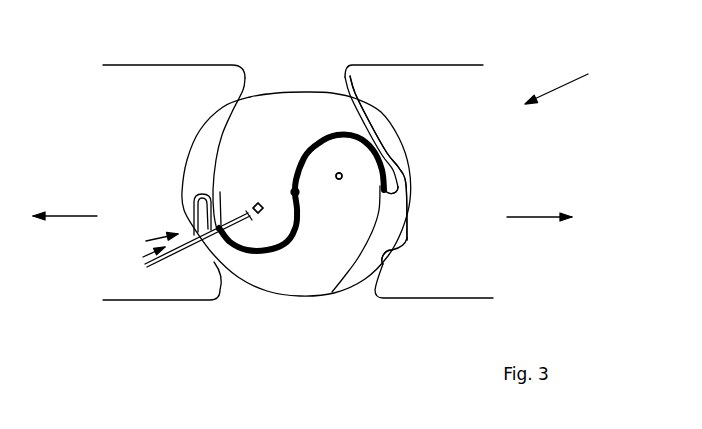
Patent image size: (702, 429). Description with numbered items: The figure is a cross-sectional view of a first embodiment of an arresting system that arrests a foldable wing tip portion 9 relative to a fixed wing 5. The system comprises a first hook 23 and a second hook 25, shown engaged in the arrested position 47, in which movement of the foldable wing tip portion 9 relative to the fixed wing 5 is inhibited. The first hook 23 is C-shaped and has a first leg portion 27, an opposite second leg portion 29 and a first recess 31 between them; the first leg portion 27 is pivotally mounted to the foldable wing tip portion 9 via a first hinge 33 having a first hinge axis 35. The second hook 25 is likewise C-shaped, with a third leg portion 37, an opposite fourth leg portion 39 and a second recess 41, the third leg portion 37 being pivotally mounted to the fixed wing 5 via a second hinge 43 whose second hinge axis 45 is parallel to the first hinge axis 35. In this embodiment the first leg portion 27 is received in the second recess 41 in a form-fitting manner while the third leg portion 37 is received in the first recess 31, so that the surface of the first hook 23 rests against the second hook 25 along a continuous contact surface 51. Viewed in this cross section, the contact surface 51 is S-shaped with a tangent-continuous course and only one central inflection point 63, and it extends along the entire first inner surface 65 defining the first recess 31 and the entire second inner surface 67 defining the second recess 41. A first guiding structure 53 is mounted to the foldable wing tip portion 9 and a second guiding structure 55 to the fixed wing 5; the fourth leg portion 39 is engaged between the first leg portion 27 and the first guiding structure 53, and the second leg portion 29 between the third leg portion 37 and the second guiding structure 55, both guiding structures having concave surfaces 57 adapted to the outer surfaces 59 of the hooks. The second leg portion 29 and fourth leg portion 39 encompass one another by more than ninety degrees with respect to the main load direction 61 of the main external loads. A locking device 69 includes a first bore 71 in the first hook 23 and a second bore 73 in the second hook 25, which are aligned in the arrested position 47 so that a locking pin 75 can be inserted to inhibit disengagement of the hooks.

The fixed wing 5 is at (84, 135).
The foldable wing tip portion 9 is at (504, 150).
The first hook 23 is at (340, 220).
The second hook 25 is at (256, 236).
The first leg portion 27 is at (378, 160).
The second leg portion 29 is at (221, 250).
The first recess 31 is at (265, 255).
The first hinge 33 is at (342, 174).
The first hinge axis 35 is at (342, 174).
The third leg portion 37 is at (253, 130).
The fourth leg portion 39 is at (407, 172).
The second recess 41 is at (317, 137).
The second hinge 43 is at (257, 203).
The second hinge axis 45 is at (257, 203).
The arrested position 47 is at (556, 78).
The contact surface 51 is at (303, 238).
The first guiding structure 53 is at (448, 199).
The second guiding structure 55 is at (125, 221).
The concave surfaces 57 is at (390, 250).
The outer surfaces 59 is at (194, 212).
The main load direction 61 is at (73, 212).
The central inflection point 63 is at (294, 192).
The first inner surface 65 is at (255, 253).
The second inner surface 67 is at (361, 138).
The locking device 69 is at (146, 241).
The first bore 71 is at (239, 252).
The second bore 73 is at (196, 194).
The locking pin 75 is at (177, 257).